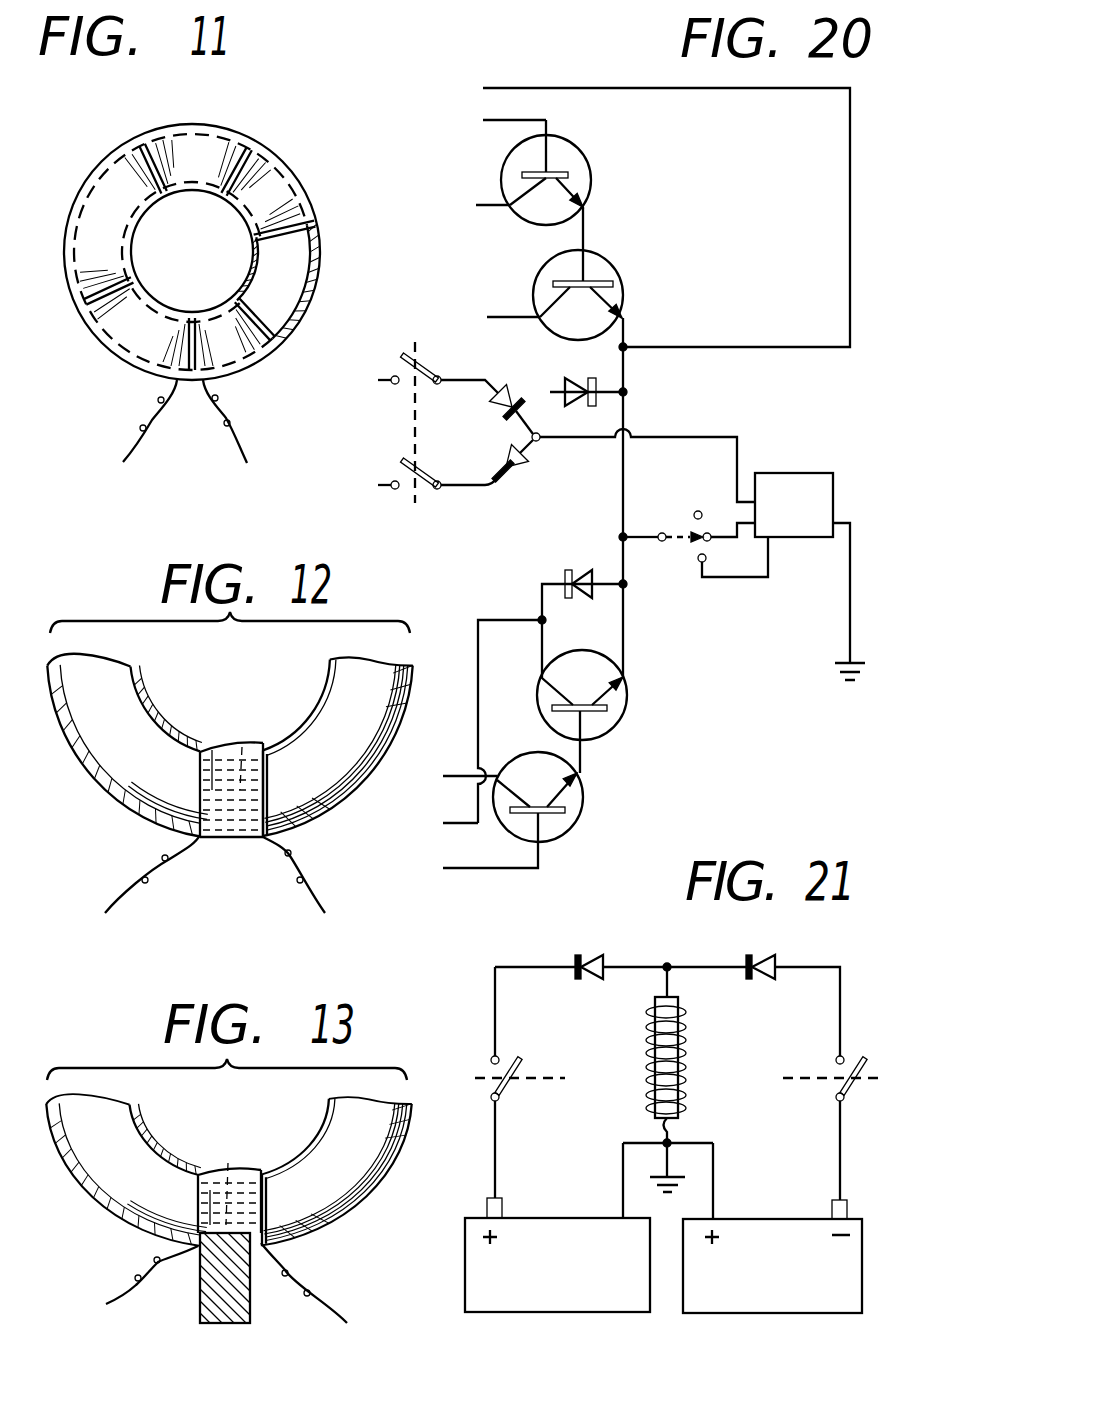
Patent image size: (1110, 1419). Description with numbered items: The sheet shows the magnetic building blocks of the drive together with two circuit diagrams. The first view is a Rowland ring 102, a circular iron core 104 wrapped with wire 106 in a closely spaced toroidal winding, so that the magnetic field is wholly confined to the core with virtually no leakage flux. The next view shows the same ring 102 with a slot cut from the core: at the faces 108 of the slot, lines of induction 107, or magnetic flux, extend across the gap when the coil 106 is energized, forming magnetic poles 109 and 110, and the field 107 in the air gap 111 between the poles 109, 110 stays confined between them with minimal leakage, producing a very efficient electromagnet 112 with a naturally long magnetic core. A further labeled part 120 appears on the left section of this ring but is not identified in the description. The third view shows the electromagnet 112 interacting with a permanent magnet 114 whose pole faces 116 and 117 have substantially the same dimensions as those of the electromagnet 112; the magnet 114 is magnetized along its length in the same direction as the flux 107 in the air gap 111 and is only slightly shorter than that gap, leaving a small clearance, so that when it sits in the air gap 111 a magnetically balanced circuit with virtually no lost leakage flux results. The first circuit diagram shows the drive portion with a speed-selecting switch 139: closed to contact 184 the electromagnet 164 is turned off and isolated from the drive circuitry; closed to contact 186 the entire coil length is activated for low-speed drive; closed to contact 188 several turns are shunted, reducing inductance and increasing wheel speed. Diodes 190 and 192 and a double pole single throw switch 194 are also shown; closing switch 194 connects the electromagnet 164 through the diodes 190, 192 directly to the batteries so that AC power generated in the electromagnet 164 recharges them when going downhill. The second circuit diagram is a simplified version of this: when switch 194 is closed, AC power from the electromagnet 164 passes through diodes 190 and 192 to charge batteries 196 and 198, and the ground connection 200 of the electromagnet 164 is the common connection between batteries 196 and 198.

In FIG. 11, the Rowland ring 102 is at (218, 160).
In FIG. 11, the circular iron core 104 is at (293, 258).
In FIG. 11, the wire 106 is at (318, 276).
In FIG. 12, the lines of induction 107 is at (242, 747).
In FIG. 13, the lines of induction 107 is at (228, 1163).
In FIG. 12, the slot faces 108 is at (250, 813).
In FIG. 12, the magnetic pole 109 is at (338, 755).
In FIG. 12, the magnetic pole 110 is at (127, 753).
In FIG. 12, the air gap 111 is at (212, 750).
In FIG. 13, the air gap 111 is at (210, 1190).
In FIG. 13, the electromagnet 112 is at (362, 1171).
In FIG. 13, the permanent magnet 114 is at (235, 1325).
In FIG. 13, the pole face 116 is at (252, 1302).
In FIG. 13, the pole face 117 is at (198, 1305).
In FIG. 12, the outer hatched band 120 is at (115, 750).
In FIG. 20, the switch 139 is at (683, 541).
In FIG. 20, the electromagnet 164 is at (780, 473).
In FIG. 21, the electromagnet 164 is at (678, 1047).
In FIG. 20, the contact 184 is at (699, 511).
In FIG. 20, the contact 186 is at (720, 545).
In FIG. 20, the contact 188 is at (699, 556).
In FIG. 20, the diode 190 is at (527, 397).
In FIG. 21, the diode 190 is at (760, 960).
In FIG. 20, the diode 192 is at (517, 479).
In FIG. 21, the diode 192 is at (577, 955).
In FIG. 20, the DPST switch 194 is at (414, 437).
In FIG. 21, the DPST switch 194 is at (508, 1083).
In FIG. 21, the battery 196 is at (582, 1313).
In FIG. 21, the battery 198 is at (712, 1313).
In FIG. 21, the ground connection 200 is at (670, 1147).